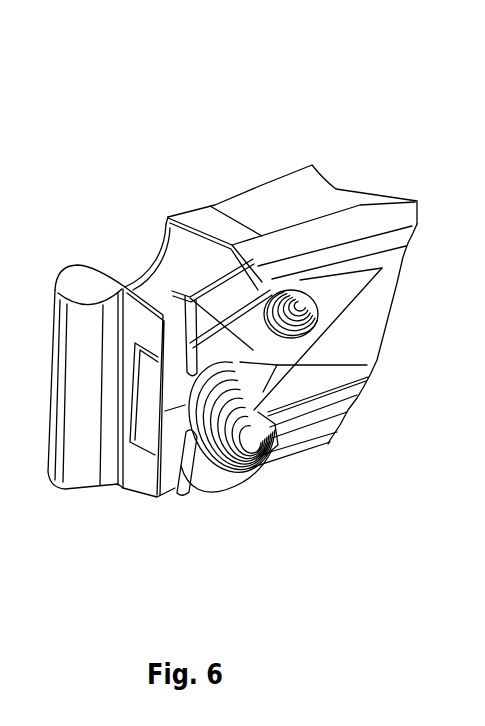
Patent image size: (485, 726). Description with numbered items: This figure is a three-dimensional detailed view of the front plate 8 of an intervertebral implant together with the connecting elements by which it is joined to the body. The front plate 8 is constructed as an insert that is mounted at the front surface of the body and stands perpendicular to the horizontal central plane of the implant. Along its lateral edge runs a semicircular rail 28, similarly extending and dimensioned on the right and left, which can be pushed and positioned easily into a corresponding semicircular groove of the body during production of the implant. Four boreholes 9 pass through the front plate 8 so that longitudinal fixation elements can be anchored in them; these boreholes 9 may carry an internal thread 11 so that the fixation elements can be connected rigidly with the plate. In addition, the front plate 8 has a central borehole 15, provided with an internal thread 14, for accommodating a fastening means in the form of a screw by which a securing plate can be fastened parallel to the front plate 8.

The front plate 8 is at (271, 161).
The borehole 9 is at (180, 487).
The internal thread 11 is at (229, 487).
The internal thread 14 is at (314, 322).
The central borehole 15 is at (290, 338).
The semicircular rail 28 is at (78, 462).